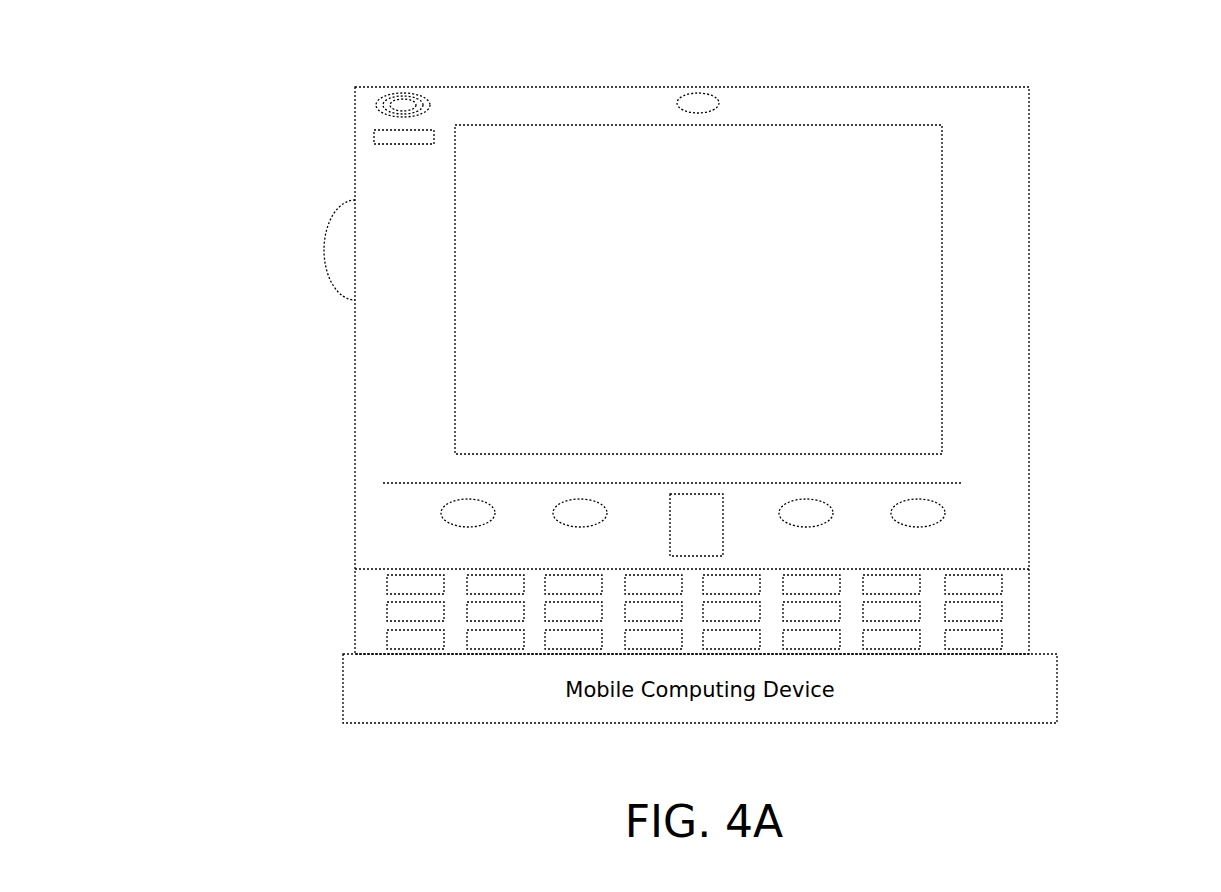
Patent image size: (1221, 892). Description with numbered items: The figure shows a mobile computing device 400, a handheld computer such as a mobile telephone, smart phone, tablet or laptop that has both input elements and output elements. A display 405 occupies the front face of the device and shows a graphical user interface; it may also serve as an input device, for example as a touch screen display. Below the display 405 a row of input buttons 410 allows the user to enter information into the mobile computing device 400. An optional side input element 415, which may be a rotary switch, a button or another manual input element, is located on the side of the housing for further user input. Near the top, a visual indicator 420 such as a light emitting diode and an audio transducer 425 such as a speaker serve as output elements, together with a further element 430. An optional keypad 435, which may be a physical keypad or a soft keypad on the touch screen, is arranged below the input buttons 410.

The mobile computing device 400 is at (1012, 99).
The display 405 is at (603, 397).
The input buttons 410 is at (697, 530).
The side input element 415 is at (342, 250).
The visual indicator 420 is at (378, 137).
The audio transducer 425 is at (380, 104).
The speaker 430 is at (716, 102).
The keypad 435 is at (368, 643).